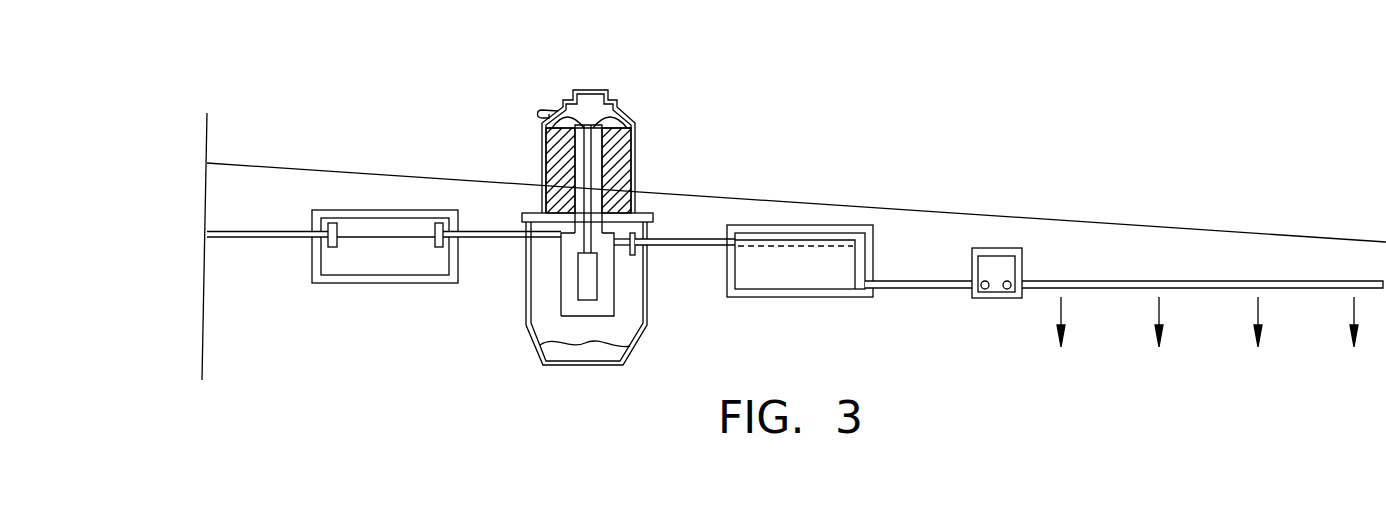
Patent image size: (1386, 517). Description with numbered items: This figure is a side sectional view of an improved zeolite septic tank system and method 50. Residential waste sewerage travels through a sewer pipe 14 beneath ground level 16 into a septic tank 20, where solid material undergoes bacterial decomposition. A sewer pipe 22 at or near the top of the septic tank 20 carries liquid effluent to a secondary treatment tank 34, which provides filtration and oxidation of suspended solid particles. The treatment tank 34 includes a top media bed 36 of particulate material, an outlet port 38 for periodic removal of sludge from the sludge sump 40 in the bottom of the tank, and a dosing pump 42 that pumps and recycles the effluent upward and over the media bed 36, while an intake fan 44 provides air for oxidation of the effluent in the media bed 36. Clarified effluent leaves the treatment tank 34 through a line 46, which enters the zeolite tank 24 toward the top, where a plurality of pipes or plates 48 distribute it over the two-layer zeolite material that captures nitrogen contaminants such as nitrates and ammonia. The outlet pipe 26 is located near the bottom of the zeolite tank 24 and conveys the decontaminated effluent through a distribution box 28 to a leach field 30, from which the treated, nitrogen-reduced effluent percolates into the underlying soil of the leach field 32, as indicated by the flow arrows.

The sewer pipe 14 is at (238, 240).
The ground level 16 is at (322, 172).
The septic tank 20 is at (358, 284).
The sewer pipe 22 is at (483, 243).
The zeolite tank 24 is at (773, 298).
The pipe 26 is at (920, 290).
The distribution box 28 is at (997, 300).
The leach field 30 is at (1157, 280).
The underlying soil of the leach field 32 is at (1226, 356).
The secondary treatment tank 34 is at (647, 293).
The top media bed 36 is at (635, 140).
The outlet port 38 is at (625, 113).
The sludge sump 40 is at (540, 340).
The dosing pump 42 is at (597, 300).
The intake fan 44 is at (548, 107).
The line 46 is at (678, 250).
The pipes or plates 48 is at (842, 246).
The system and method 50 is at (447, 90).